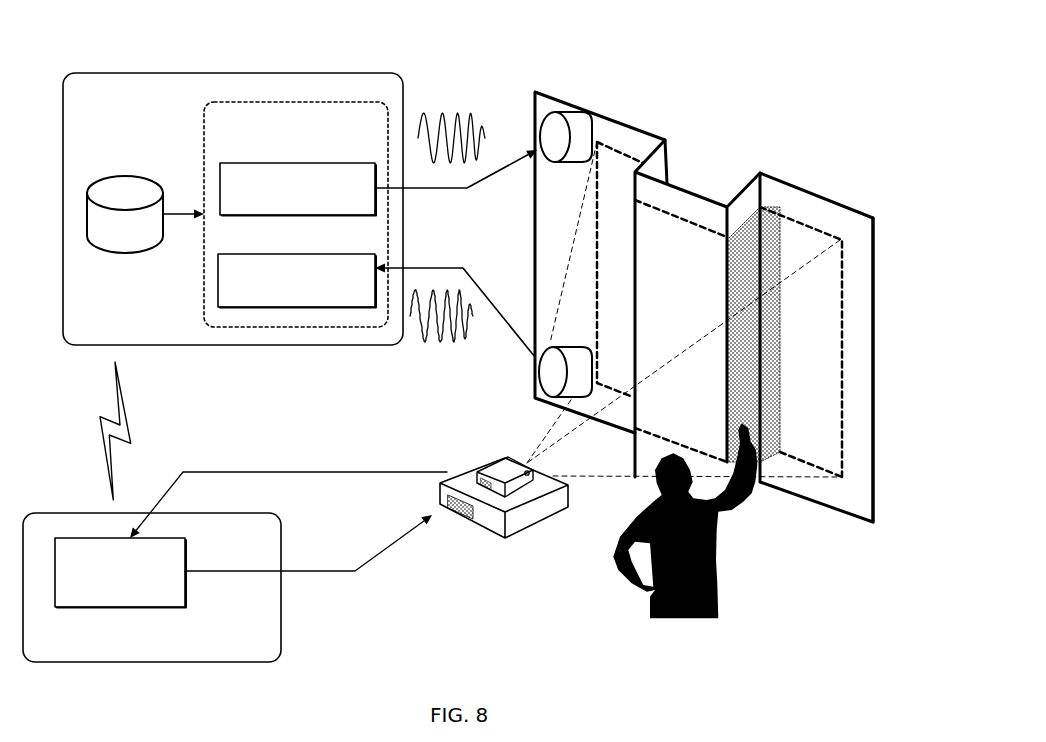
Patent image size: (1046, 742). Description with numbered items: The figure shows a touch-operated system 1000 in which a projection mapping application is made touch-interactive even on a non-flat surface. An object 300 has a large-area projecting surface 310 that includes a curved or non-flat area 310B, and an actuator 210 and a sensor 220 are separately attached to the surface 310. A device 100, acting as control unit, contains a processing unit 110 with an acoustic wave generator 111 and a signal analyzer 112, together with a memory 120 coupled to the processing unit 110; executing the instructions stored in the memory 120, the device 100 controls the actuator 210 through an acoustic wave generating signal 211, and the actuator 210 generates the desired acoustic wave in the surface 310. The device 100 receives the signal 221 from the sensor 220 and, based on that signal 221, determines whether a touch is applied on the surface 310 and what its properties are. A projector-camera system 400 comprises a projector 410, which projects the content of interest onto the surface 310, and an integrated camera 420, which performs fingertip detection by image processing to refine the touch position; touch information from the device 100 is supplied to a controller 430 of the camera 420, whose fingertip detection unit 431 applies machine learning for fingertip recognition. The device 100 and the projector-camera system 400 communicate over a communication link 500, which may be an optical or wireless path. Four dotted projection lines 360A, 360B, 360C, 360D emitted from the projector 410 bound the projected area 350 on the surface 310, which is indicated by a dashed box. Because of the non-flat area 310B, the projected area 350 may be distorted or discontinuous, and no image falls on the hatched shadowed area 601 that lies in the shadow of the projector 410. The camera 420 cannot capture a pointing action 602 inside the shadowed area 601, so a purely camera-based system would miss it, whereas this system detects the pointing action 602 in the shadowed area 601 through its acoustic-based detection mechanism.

The touch-operated system 1000 is at (689, 75).
The device 100 is at (298, 73).
The processing unit 110 is at (314, 105).
The acoustic wave generator 111 is at (299, 163).
The signal analyzer 112 is at (299, 254).
The memory 120 is at (123, 177).
The actuator 210 is at (580, 127).
The acoustic wave generating signal 211 is at (456, 90).
The sensor 220 is at (578, 357).
The signal 221 is at (444, 350).
The object 300 is at (668, 129).
The projecting surface 310 is at (810, 212).
The non-flat area 310B is at (683, 187).
The projected area 350 is at (825, 358).
The projection line 360A is at (567, 260).
The projection line 360B is at (793, 287).
The projection line 360C is at (547, 437).
The projection line 360D is at (800, 482).
The projector-camera system 400 is at (523, 518).
The projector 410 is at (538, 513).
The camera 420 is at (507, 473).
The controller 430 is at (235, 567).
The fingertip detection unit 431 is at (122, 607).
The communication link 500 is at (137, 421).
The shadowed area 601 is at (770, 360).
The pointing action 602 is at (740, 425).